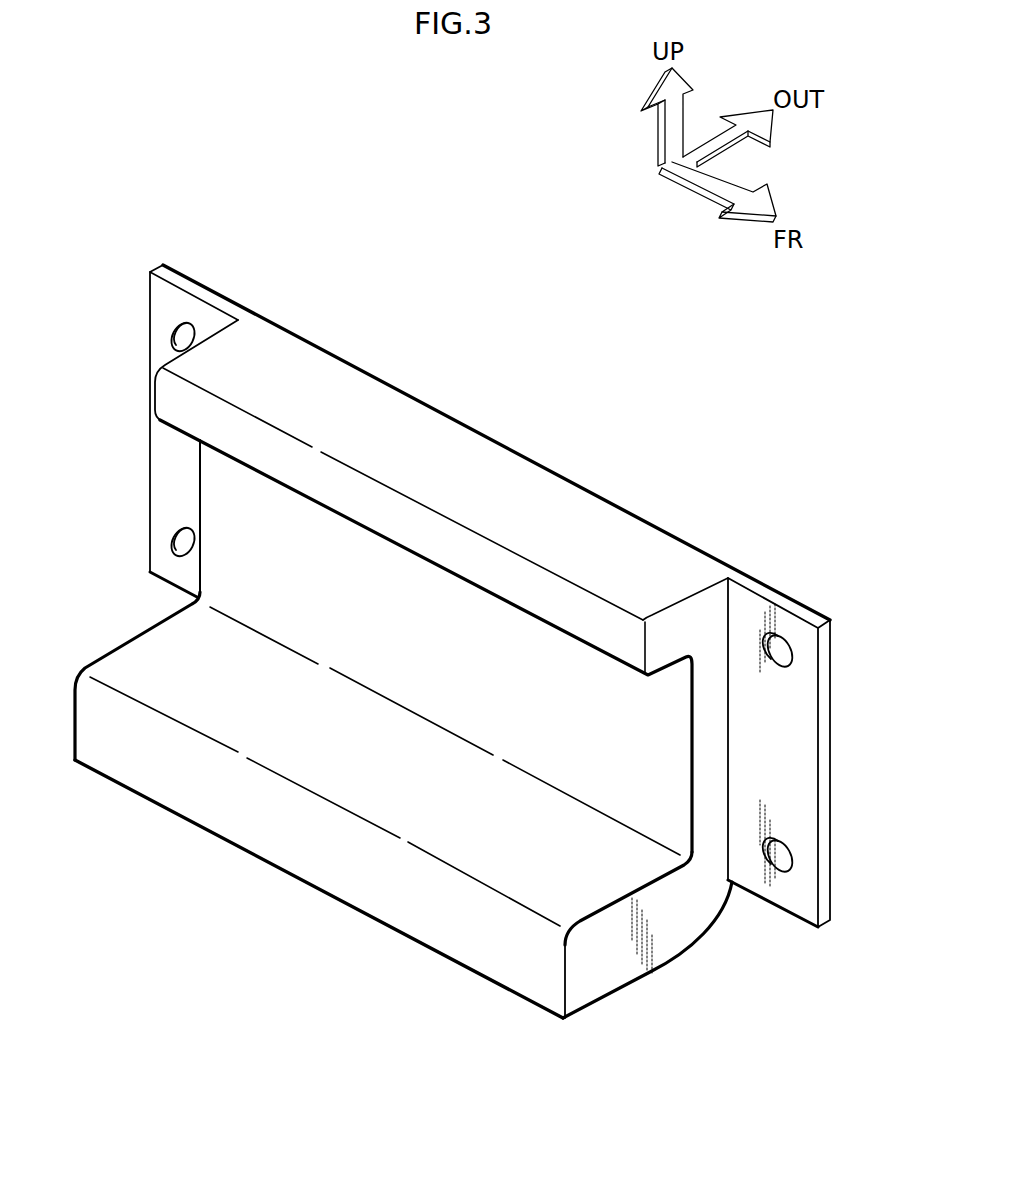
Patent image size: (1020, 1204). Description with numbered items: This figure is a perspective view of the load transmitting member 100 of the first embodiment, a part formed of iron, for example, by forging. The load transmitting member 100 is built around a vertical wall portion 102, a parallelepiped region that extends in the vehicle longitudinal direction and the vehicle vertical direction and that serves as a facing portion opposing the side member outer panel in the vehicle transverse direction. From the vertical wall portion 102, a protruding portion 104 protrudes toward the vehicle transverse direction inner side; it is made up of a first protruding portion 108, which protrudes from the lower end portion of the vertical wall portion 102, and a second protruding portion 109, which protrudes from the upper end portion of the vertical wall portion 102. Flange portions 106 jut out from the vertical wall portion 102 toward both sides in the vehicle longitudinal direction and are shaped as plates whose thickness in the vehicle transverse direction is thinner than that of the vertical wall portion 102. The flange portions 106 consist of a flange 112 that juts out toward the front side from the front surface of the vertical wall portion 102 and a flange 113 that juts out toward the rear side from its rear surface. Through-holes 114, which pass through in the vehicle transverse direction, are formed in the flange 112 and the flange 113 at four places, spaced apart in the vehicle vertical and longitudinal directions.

The load transmitting member 100 is at (528, 388).
The vertical wall portion 102 is at (242, 513).
The protruding portion 104 is at (267, 923).
The flange portions 106 is at (213, 291).
The first protruding portion 108 is at (455, 912).
The second protruding portion 109 is at (540, 605).
The flange 112 is at (790, 603).
The flange 113 is at (190, 285).
The through-holes 114 is at (178, 333).